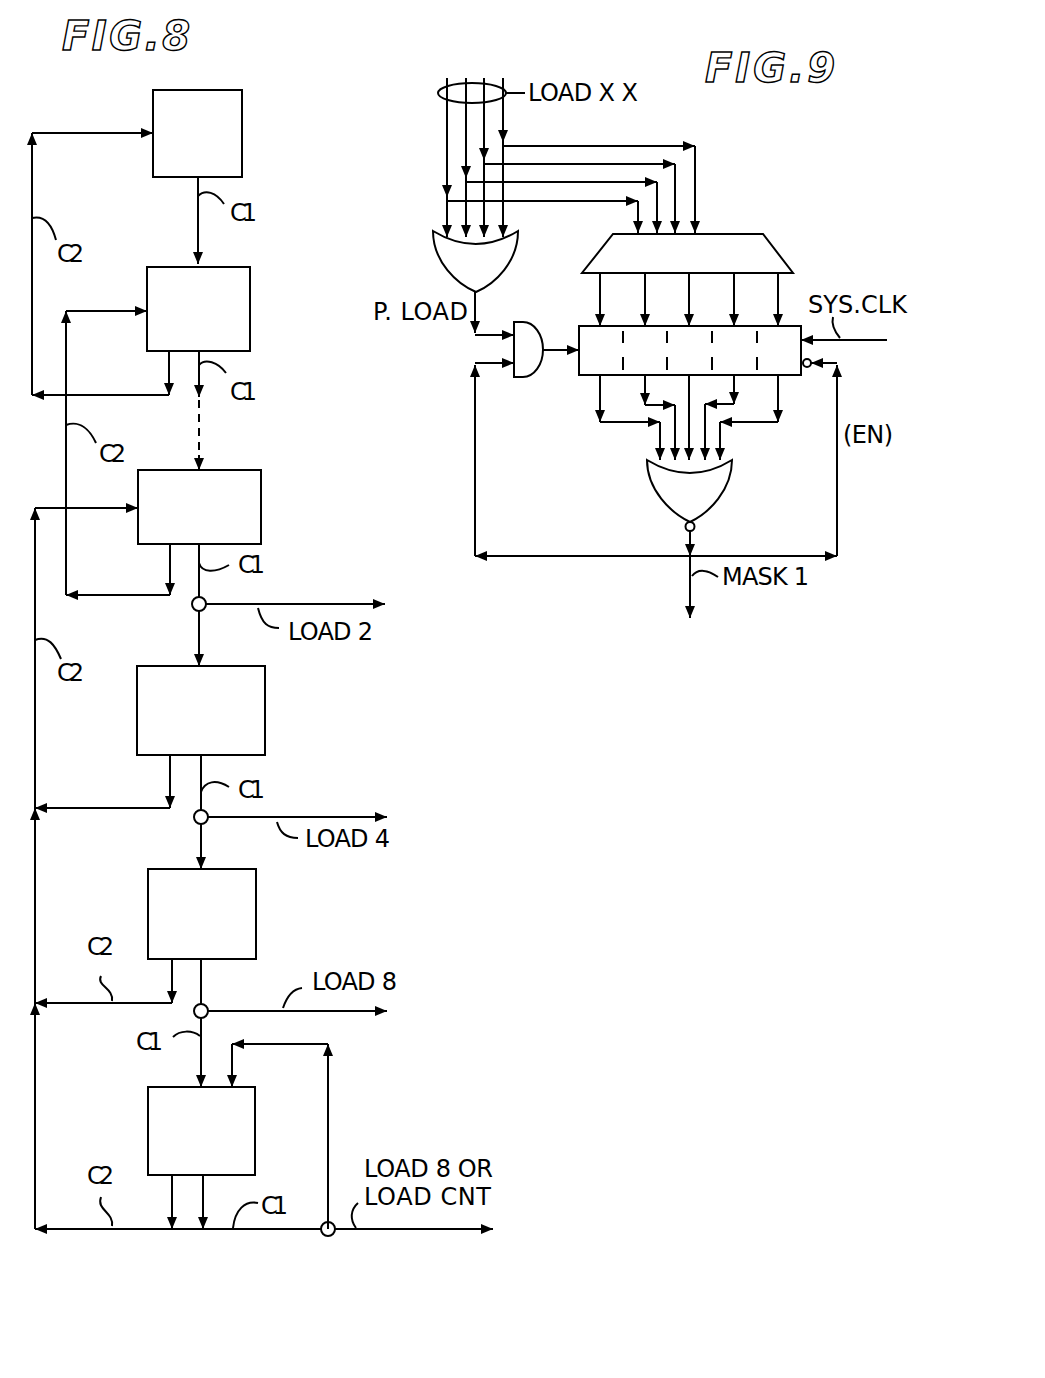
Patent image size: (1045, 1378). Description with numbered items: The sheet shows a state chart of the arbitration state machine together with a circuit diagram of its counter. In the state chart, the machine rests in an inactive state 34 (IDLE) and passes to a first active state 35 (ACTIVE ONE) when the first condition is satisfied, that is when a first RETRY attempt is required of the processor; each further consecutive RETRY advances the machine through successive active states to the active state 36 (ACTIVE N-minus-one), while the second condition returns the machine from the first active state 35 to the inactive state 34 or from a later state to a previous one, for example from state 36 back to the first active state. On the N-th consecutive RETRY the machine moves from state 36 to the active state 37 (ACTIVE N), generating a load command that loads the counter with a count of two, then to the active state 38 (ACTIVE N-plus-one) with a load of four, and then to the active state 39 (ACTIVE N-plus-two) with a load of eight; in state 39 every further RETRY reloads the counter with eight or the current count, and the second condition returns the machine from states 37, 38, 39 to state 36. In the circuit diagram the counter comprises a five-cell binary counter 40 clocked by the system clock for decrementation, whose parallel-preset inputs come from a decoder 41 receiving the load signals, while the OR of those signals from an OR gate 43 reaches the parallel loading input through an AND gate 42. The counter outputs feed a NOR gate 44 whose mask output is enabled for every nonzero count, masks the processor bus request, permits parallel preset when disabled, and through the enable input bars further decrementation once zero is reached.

In FIG. 8, the inactive state 34 is at (242, 145).
In FIG. 8, the first active state 35 is at (250, 325).
In FIG. 8, the active state N-1 36 is at (261, 490).
In FIG. 8, the active state N 37 is at (265, 718).
In FIG. 8, the active state N+1 38 is at (256, 908).
In FIG. 8, the active state N+2 39 is at (255, 1107).
In FIG. 9, the binary counter 40 is at (588, 377).
In FIG. 9, the decoder 41 is at (778, 243).
In FIG. 9, the AND gate 42 is at (528, 323).
In FIG. 9, the OR gate 43 is at (515, 245).
In FIG. 9, the NOR gate 44 is at (728, 482).